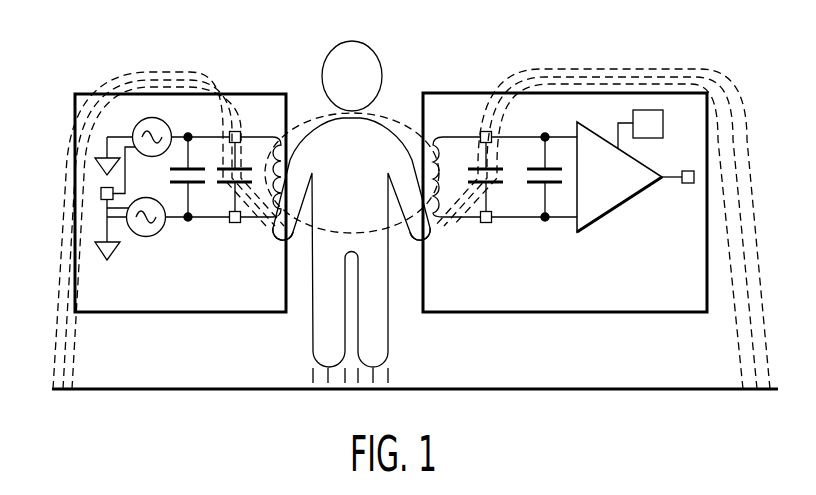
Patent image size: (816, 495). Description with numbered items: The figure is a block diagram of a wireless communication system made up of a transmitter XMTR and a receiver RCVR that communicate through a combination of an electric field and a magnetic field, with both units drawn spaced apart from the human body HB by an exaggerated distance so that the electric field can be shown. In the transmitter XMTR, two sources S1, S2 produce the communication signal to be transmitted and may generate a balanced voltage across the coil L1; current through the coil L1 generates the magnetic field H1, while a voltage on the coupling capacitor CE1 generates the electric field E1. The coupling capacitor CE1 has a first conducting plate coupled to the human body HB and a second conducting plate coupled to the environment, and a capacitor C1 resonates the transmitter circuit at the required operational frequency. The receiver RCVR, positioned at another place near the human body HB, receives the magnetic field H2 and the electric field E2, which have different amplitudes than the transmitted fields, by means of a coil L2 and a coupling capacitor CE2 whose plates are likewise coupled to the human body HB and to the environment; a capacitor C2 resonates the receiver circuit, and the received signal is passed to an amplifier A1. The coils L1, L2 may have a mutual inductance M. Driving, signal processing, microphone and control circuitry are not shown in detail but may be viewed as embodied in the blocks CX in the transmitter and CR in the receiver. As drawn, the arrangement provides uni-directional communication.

The transmitter XMTR is at (180, 203).
The receiver RCVR is at (565, 202).
The source S1 is at (152, 151).
The source S2 is at (146, 233).
The block CX is at (100, 191).
The capacitor C1 is at (187, 195).
The coupling capacitor CE1 is at (234, 195).
The coil L1 is at (270, 159).
The electric field E1 is at (168, 214).
The human body HB is at (352, 64).
The magnetic field H1 is at (299, 193).
The magnetic field H2 is at (403, 193).
The mutual inductance M is at (352, 186).
The coil L2 is at (440, 159).
The coupling capacitor CE2 is at (486, 195).
The capacitor C2 is at (544, 195).
The amplifier A1 is at (635, 177).
The block CR is at (664, 125).
The electric field E2 is at (602, 215).